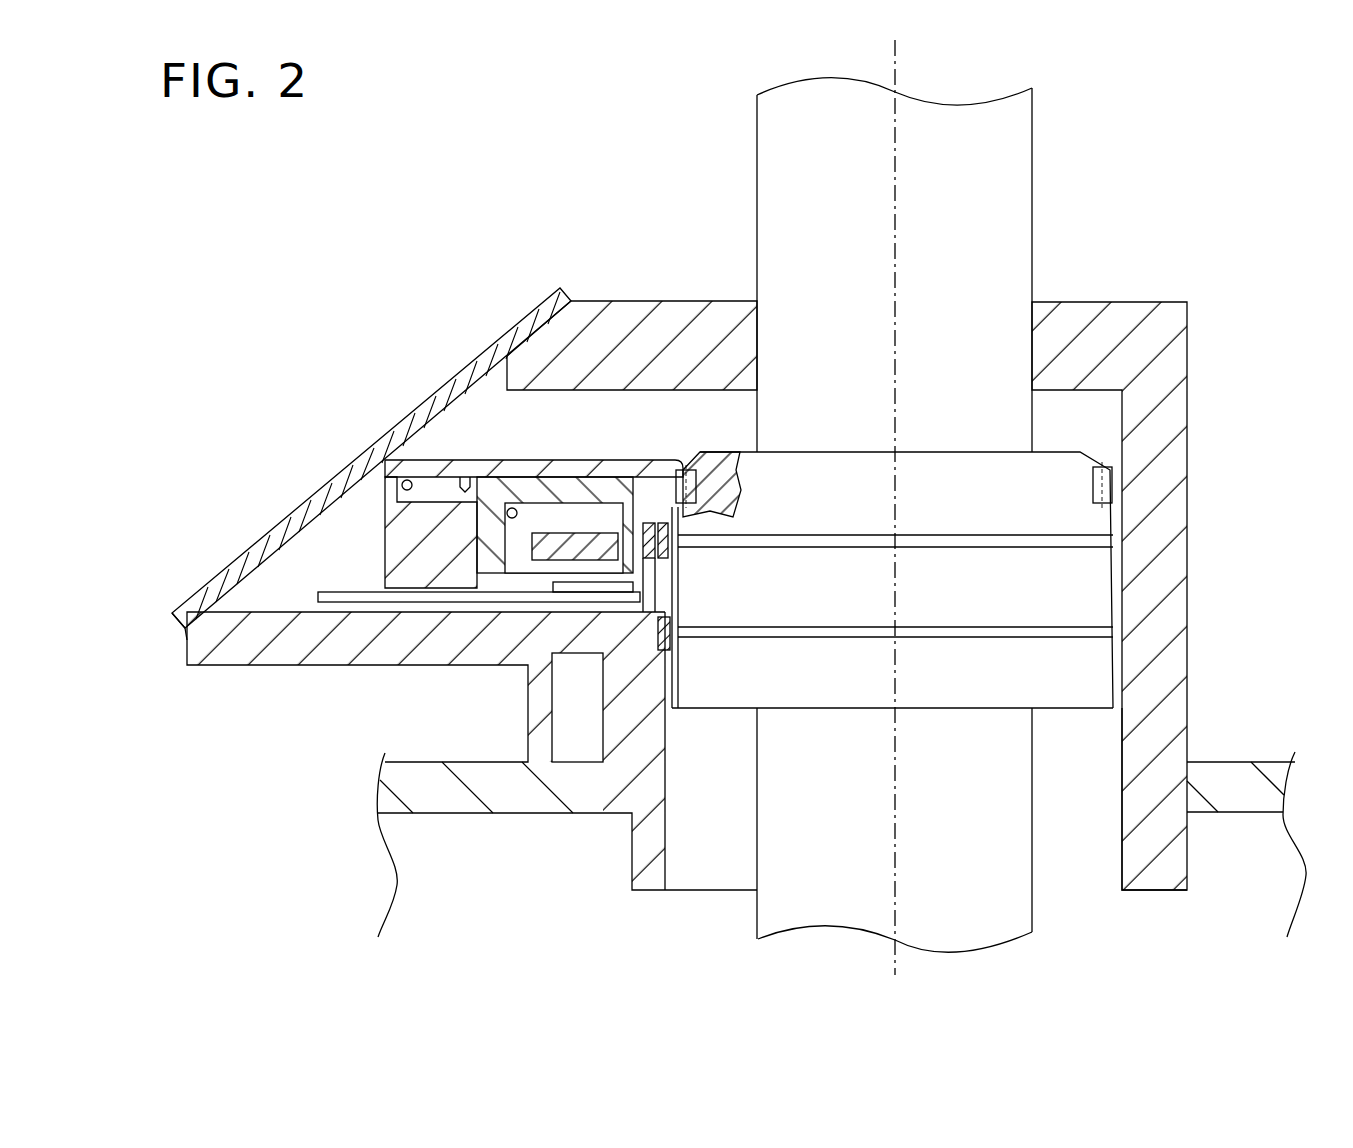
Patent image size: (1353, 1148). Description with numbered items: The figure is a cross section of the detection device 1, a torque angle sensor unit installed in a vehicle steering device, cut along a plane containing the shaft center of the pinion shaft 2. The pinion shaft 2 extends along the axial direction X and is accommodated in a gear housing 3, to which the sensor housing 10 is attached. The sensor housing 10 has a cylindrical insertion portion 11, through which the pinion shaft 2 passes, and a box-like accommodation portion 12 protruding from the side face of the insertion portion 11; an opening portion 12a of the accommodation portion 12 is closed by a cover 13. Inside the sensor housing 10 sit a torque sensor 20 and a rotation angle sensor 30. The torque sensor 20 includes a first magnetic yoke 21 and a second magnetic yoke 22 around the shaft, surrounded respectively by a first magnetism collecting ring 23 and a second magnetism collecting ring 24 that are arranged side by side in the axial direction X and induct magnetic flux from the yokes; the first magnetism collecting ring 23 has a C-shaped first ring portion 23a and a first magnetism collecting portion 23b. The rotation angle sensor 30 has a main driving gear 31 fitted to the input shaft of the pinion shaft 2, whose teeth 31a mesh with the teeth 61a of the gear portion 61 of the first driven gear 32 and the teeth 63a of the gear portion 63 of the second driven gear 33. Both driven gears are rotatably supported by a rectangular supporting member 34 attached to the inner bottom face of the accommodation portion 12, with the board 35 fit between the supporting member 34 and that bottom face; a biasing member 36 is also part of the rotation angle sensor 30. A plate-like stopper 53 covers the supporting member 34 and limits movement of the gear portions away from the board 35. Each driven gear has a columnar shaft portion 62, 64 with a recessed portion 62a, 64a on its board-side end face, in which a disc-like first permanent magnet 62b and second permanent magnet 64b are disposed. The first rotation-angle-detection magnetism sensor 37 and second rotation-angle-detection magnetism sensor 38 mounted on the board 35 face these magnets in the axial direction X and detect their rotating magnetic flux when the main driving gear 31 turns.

The detection device 1 is at (1141, 554).
The pinion shaft 2 is at (1033, 140).
The gear housing 3 is at (1225, 762).
The sensor housing 10 is at (1141, 596).
The insertion portion 11 is at (1122, 812).
The accommodation portion 12 is at (426, 759).
The opening portion 12a is at (187, 614).
The cover 13 is at (517, 324).
The torque sensor 20 is at (923, 504).
The first magnetic yoke 21 is at (1120, 540).
The second magnetic yoke 22 is at (1120, 637).
The first magnetism collecting ring 23 is at (663, 464).
The first ring portion 23a is at (665, 457).
The first magnetism collecting portion 23b is at (625, 457).
The second magnetism collecting ring 24 is at (675, 646).
The rotation angle sensor 30 is at (775, 540).
The main driving gear 31 is at (973, 552).
The teeth 31a is at (1115, 487).
The first driven gear 32 is at (549, 488).
The second driven gear 33 is at (523, 487).
The supporting member 34 is at (385, 572).
The board 35 is at (338, 602).
The biasing member 36 is at (512, 518).
The first rotation-angle-detection magnetism sensor 37 is at (717, 574).
The second rotation-angle-detection magnetism sensor 38 is at (663, 540).
The stopper 53 is at (410, 462).
The gear portion 61 is at (757, 484).
The gear portion 63 is at (705, 472).
The teeth 61a is at (408, 416).
The teeth 63a is at (464, 482).
The shaft portion 62 is at (623, 631).
The shaft portion 64 is at (553, 631).
The recessed portion 62a is at (553, 649).
The recessed portion 64a is at (649, 585).
The first permanent magnet 62b is at (689, 589).
The second permanent magnet 64b is at (605, 589).
The axial direction X is at (897, 62).